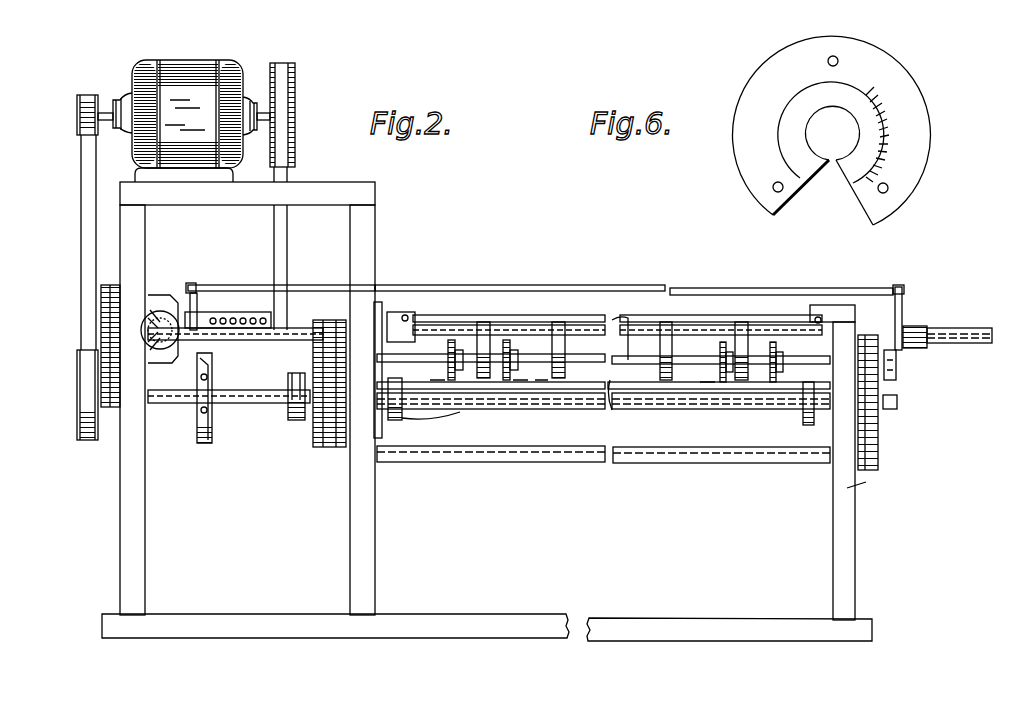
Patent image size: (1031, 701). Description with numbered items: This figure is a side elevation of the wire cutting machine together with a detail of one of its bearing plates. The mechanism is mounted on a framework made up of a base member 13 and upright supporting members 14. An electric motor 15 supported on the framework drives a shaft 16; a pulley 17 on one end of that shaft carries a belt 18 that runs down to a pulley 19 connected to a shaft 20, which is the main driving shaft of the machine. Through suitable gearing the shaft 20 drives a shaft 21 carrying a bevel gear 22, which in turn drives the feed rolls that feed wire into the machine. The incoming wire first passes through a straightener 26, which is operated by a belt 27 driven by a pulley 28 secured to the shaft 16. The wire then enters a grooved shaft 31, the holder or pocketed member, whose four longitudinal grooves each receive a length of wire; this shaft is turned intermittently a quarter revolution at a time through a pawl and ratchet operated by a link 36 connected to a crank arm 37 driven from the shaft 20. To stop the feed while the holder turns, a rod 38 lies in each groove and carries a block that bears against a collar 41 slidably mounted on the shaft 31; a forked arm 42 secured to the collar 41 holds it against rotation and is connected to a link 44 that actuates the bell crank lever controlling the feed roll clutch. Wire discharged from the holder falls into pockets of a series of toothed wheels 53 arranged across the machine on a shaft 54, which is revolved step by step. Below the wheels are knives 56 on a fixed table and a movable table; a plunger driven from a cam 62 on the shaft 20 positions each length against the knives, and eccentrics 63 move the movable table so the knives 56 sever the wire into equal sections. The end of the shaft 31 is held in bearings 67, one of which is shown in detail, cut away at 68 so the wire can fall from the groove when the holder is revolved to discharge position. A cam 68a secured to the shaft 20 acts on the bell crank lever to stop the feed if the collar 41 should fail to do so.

In FIG. 2, the base member 13 is at (455, 631).
In FIG. 2, the upright supporting members 14 is at (135, 548).
In FIG. 2, the electric motor 15 is at (185, 121).
In FIG. 2, the shaft 16 is at (104, 105).
In FIG. 2, the pulley 17 is at (76, 118).
In FIG. 2, the belt 18 is at (81, 252).
In FIG. 2, the pulley 19 is at (65, 395).
In FIG. 2, the main driving shaft 20 is at (240, 405).
In FIG. 2, the shaft 21 is at (240, 336).
In FIG. 2, the bevel gear 22 is at (160, 308).
In FIG. 2, the straightener 26 is at (213, 308).
In FIG. 2, the belt 27 is at (280, 263).
In FIG. 2, the pulley 28 is at (295, 108).
In FIG. 2, the grooved shaft 31 is at (435, 325).
In FIG. 2, the link 36 is at (892, 385).
In FIG. 2, the crank arm 37 is at (895, 405).
In FIG. 2, the rods 38 is at (942, 328).
In FIG. 2, the collar 41 is at (906, 326).
In FIG. 2, the forked arm 42 is at (903, 310).
In FIG. 2, the link 44 is at (717, 292).
In FIG. 2, the toothed wheel 53 is at (455, 344).
In FIG. 2, the shaft 54 is at (618, 356).
In FIG. 2, the knives 56 is at (508, 392).
In FIG. 2, the cam 62 is at (296, 425).
In FIG. 2, the eccentrics 63 is at (398, 420).
In FIG. 2, the bearings 67 is at (378, 318).
In FIG. 6, the bearings 67 is at (905, 138).
In FIG. 6, the cut-away portion 68 is at (828, 190).
In FIG. 2, the cam 68a is at (203, 443).